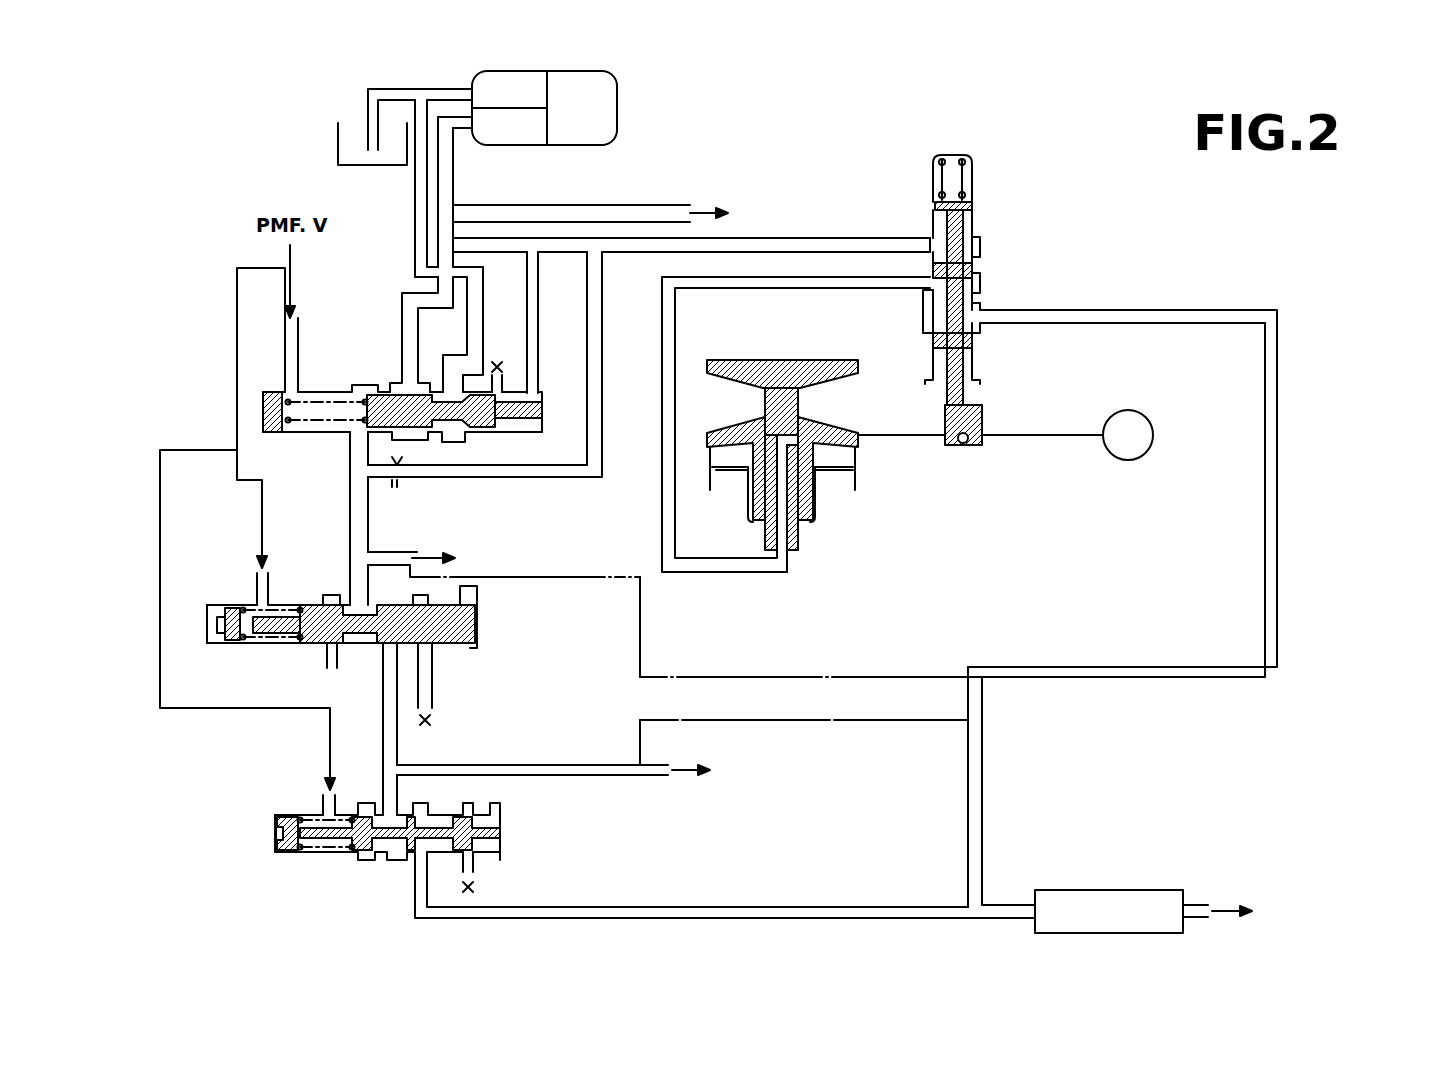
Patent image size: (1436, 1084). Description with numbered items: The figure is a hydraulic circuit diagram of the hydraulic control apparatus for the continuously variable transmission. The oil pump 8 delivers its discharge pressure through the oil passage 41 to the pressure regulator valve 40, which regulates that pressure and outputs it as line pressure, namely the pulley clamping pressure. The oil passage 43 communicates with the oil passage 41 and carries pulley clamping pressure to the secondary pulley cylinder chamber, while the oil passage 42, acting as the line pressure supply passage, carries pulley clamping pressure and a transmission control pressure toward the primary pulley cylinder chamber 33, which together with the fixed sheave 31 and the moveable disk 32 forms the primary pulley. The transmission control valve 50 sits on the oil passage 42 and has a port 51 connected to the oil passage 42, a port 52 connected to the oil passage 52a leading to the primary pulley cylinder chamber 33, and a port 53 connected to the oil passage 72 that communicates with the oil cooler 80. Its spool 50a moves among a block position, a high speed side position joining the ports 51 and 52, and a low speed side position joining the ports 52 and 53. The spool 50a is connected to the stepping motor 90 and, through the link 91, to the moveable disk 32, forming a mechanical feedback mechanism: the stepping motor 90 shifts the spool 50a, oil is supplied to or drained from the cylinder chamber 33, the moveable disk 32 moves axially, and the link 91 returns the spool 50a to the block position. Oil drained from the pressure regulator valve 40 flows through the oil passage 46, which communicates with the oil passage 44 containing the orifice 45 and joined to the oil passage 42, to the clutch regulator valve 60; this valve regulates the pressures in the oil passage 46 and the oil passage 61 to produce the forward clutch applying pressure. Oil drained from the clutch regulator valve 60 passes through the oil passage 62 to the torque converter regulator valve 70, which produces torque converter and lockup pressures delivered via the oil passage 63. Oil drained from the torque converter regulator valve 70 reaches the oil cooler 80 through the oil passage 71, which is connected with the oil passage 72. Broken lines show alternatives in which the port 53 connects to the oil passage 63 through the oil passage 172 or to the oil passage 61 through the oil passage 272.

The oil pump 8 is at (617, 101).
The fixed sheave of secondary pulley 31 is at (745, 360).
The moveable disk 32 is at (720, 432).
The primary pulley cylinder chamber 33 is at (830, 455).
The pressure regulator valve 40 is at (525, 438).
The oil passage 41 is at (453, 173).
The oil passage 42 is at (645, 252).
The oil passage 43 is at (620, 205).
The oil passage 44 is at (602, 392).
The orifice 45 is at (401, 481).
The oil passage 46 is at (350, 498).
The transmission control valve 50 is at (981, 289).
The spool 50a is at (960, 228).
The port 51 is at (930, 238).
The port 52 is at (930, 285).
The oil passage 52a is at (733, 573).
The port 53 is at (982, 308).
The clutch regulator valve 60 is at (323, 676).
The oil passage 61 is at (388, 551).
The oil passage 62 is at (383, 680).
The oil passage 63 is at (555, 765).
The torque converter regulator valve 70 is at (268, 850).
The oil passage 71 is at (545, 907).
The oil passage 72 is at (968, 838).
The oil cooler 80 is at (1155, 890).
The stepping motor 90 is at (1145, 412).
The link 91 is at (1035, 435).
The oil passage 172 is at (838, 720).
The oil passage 272 is at (838, 676).